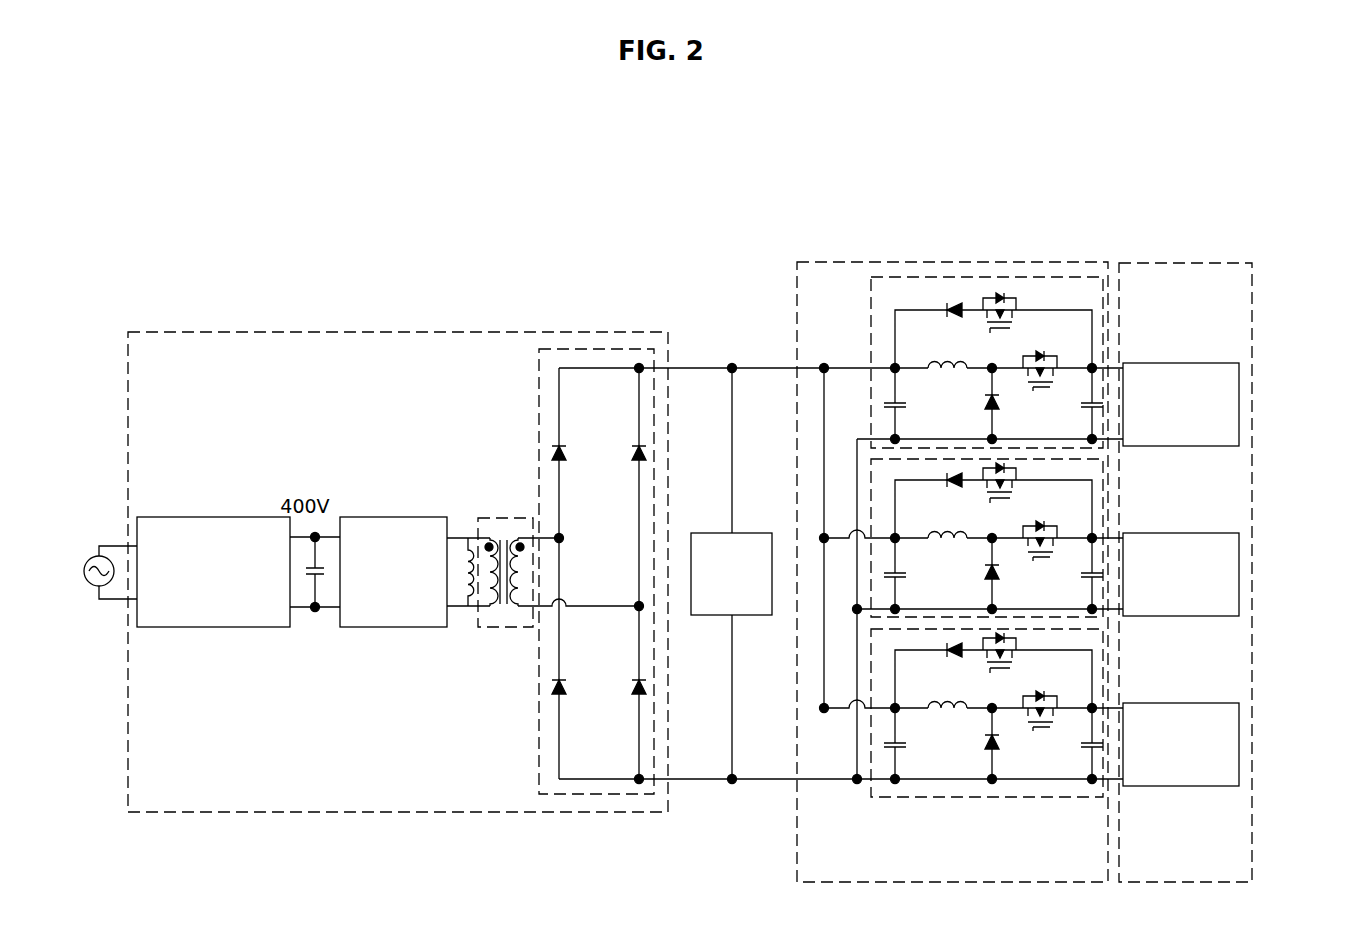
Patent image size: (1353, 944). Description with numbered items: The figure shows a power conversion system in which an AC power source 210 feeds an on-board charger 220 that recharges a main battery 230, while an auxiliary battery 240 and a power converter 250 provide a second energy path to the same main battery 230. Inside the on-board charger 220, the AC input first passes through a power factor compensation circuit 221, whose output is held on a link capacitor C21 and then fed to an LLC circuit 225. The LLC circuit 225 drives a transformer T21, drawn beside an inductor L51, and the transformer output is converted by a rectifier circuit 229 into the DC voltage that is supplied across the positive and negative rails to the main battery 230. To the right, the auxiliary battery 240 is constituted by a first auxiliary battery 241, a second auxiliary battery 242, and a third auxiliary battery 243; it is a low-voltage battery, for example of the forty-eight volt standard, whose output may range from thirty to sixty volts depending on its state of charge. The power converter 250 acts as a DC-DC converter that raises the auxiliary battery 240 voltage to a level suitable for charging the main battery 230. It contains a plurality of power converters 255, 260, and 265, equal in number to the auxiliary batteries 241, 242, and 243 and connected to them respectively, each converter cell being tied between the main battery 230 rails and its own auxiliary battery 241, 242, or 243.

The AC power source 210 is at (96, 556).
The on-board charger 220 is at (430, 332).
The power factor compensation circuit 221 is at (236, 517).
The LLC circuit 225 is at (380, 517).
The rectifier circuit 229 is at (597, 349).
The main battery 230 is at (745, 533).
The auxiliary battery 240 is at (1172, 263).
The first auxiliary battery 241 is at (1239, 402).
The second auxiliary battery 242 is at (1239, 572).
The third auxiliary battery 243 is at (1239, 742).
The power converter 250 is at (973, 262).
The first power converter 255 is at (875, 277).
The second power converter 260 is at (871, 596).
The third power converter 265 is at (927, 797).
The transformer T21 is at (500, 518).
The link capacitor C21 is at (326, 580).
The inductor L51 is at (462, 595).